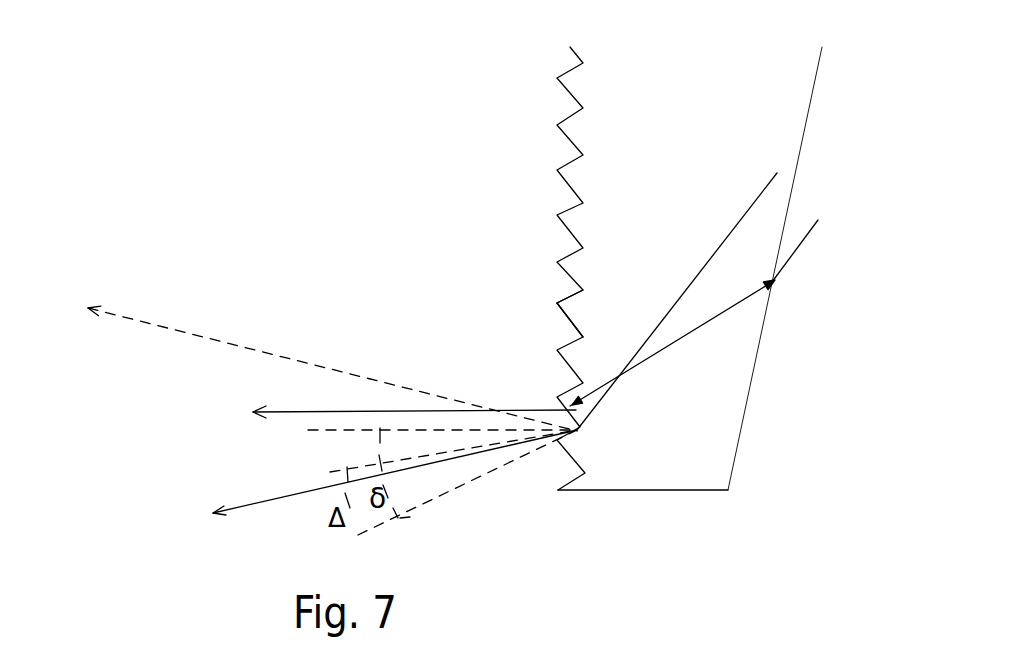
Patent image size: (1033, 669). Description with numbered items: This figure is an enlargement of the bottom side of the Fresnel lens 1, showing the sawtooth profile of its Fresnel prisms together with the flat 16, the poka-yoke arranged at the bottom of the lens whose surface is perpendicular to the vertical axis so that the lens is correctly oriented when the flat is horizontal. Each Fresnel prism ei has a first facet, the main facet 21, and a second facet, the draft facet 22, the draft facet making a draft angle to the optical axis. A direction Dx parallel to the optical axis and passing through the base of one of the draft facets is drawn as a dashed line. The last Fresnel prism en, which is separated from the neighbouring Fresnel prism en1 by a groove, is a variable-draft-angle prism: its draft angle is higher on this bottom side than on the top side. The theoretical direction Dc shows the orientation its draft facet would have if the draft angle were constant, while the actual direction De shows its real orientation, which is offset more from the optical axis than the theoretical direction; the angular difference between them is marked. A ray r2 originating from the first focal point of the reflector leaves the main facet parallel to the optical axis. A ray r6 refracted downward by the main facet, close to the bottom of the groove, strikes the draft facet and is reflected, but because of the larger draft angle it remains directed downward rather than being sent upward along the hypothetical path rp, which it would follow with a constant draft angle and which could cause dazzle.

The lens 1 is at (634, 268).
The flat 16 is at (628, 492).
The main facet 21 is at (572, 323).
The draft facet 22 is at (572, 295).
The Fresnel prism ei is at (578, 218).
The Fresnel prism en1 is at (577, 402).
The last Fresnel prism en is at (578, 450).
The light ray r2 is at (535, 319).
The light ray r6 is at (495, 358).
The hypothetical path rp is at (332, 359).
The direction parallel to the optical axis Dx is at (307, 430).
The theoretical direction Dc is at (330, 472).
The actual direction De is at (380, 528).